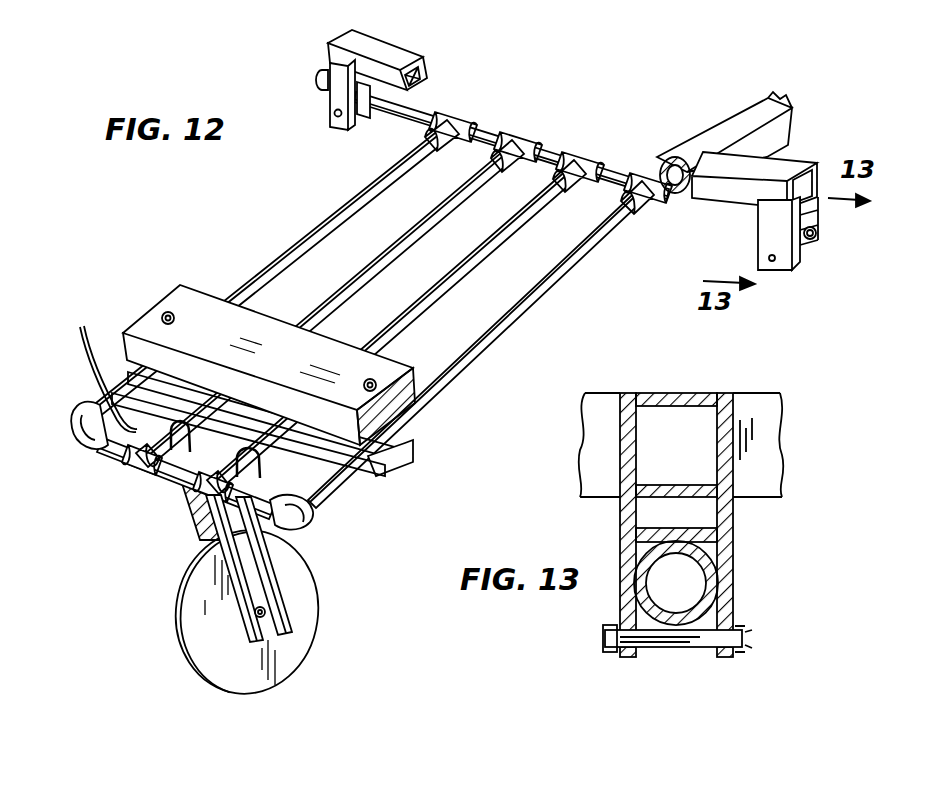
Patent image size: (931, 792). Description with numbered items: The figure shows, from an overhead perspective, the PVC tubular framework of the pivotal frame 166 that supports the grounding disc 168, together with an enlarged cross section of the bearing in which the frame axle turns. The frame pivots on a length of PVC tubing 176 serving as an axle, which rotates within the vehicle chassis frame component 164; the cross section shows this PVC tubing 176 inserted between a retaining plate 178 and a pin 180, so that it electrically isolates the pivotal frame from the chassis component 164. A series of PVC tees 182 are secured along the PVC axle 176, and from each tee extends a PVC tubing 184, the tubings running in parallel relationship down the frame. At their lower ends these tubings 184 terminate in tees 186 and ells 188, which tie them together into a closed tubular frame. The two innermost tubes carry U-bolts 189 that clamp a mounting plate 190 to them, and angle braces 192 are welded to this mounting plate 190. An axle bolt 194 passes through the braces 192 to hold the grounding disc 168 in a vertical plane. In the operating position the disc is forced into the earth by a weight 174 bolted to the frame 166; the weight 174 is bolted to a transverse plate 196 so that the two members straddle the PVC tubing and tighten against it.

In FIG. 12, the vehicle chassis frame component 164 is at (818, 210).
In FIG. 13, the vehicle chassis frame component 164 is at (733, 517).
In FIG. 12, the pivotal frame 166 is at (280, 236).
In FIG. 12, the grounding disc 168 is at (203, 640).
In FIG. 12, the weight 174 is at (418, 366).
In FIG. 12, the PVC tubing 176 is at (817, 238).
In FIG. 13, the PVC tubing 176 is at (733, 560).
In FIG. 13, the retaining plate 178 is at (662, 528).
In FIG. 13, the pin 180 is at (693, 650).
In FIG. 12, the PVC tees 182 is at (645, 168).
In FIG. 12, the PVC tubings 184 is at (443, 210).
In FIG. 12, the tees 186 is at (180, 510).
In FIG. 12, the ells 188 is at (72, 442).
In FIG. 12, the U-bolts 189 is at (240, 447).
In FIG. 12, the mounting plate 190 is at (312, 473).
In FIG. 12, the angle braces 192 is at (272, 580).
In FIG. 12, the axle bolt 194 is at (264, 613).
In FIG. 12, the transverse plate 196 is at (410, 450).